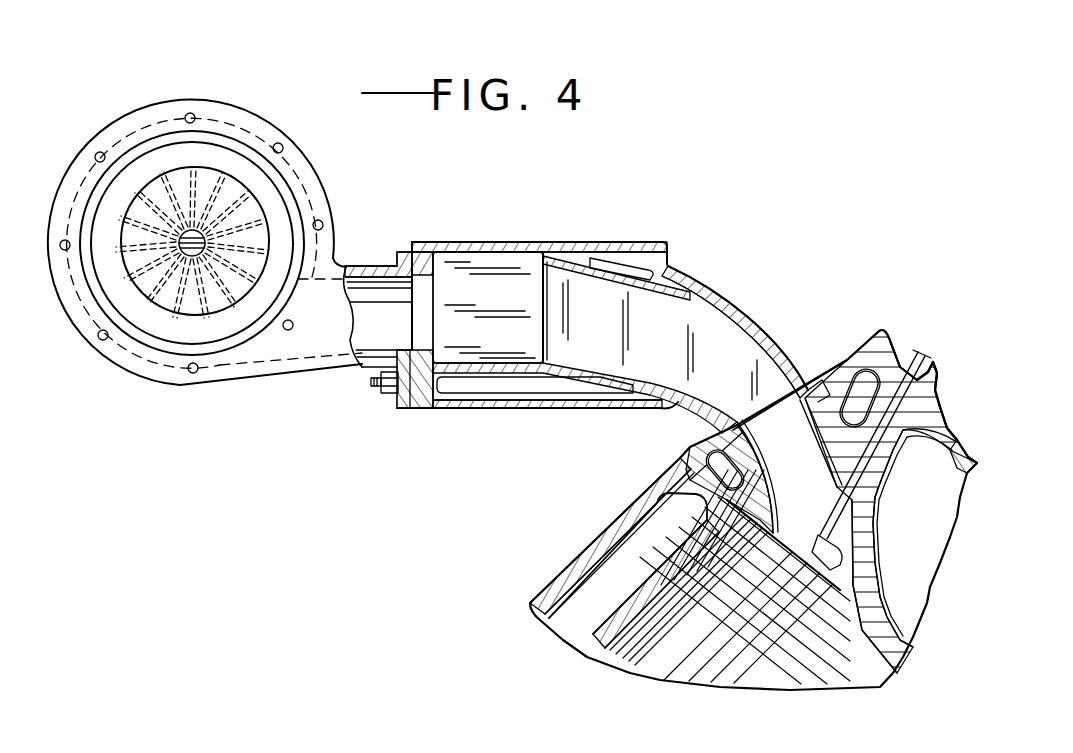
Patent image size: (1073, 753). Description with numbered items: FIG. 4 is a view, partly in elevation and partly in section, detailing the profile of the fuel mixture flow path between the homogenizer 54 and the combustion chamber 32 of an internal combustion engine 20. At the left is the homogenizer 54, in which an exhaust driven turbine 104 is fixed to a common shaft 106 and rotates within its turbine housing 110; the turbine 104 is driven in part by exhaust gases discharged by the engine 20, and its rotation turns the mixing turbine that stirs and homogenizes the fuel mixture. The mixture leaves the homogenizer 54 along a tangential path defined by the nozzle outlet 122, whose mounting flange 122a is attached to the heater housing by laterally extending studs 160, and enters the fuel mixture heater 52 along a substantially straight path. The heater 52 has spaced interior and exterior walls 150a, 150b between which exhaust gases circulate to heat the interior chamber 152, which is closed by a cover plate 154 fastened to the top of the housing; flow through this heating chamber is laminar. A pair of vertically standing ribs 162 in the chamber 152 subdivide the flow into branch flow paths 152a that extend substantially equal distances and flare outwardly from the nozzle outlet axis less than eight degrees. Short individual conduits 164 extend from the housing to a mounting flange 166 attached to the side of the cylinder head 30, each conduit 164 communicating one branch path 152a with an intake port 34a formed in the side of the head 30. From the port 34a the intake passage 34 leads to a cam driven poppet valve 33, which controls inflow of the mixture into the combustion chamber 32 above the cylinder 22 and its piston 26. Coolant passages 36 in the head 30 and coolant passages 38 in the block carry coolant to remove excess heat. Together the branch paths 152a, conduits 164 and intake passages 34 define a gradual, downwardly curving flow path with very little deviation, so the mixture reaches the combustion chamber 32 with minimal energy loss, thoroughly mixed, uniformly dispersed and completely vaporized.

The internal combustion engine 20 is at (957, 606).
The cylinder 22 is at (722, 538).
The piston 26 is at (782, 660).
The cylinder head 30 is at (957, 432).
The combustion chamber 32 is at (813, 568).
The poppet valve 33 is at (922, 358).
The intake passage 34 is at (820, 486).
The intake port 34a is at (740, 432).
The coolant passage 36 is at (703, 457).
The coolant passage 38 is at (606, 556).
The fuel mixture heater 52 is at (624, 229).
The homogenizer 54 is at (333, 186).
The exhaust driven turbine 104 is at (158, 308).
The common shaft 106 is at (203, 226).
The turbine housing 110 is at (196, 232).
The nozzle outlet 122 is at (363, 266).
The mounting flange 122a is at (397, 402).
The interior wall 150a is at (516, 338).
The exterior wall 150b is at (527, 412).
The interior chamber 152 is at (502, 308).
The branch flow path 152a is at (690, 346).
The cover plate 154 is at (486, 243).
The stud 160 is at (374, 387).
The rib 162 is at (540, 262).
The conduit 164 is at (728, 316).
The mounting flange 166 is at (806, 385).